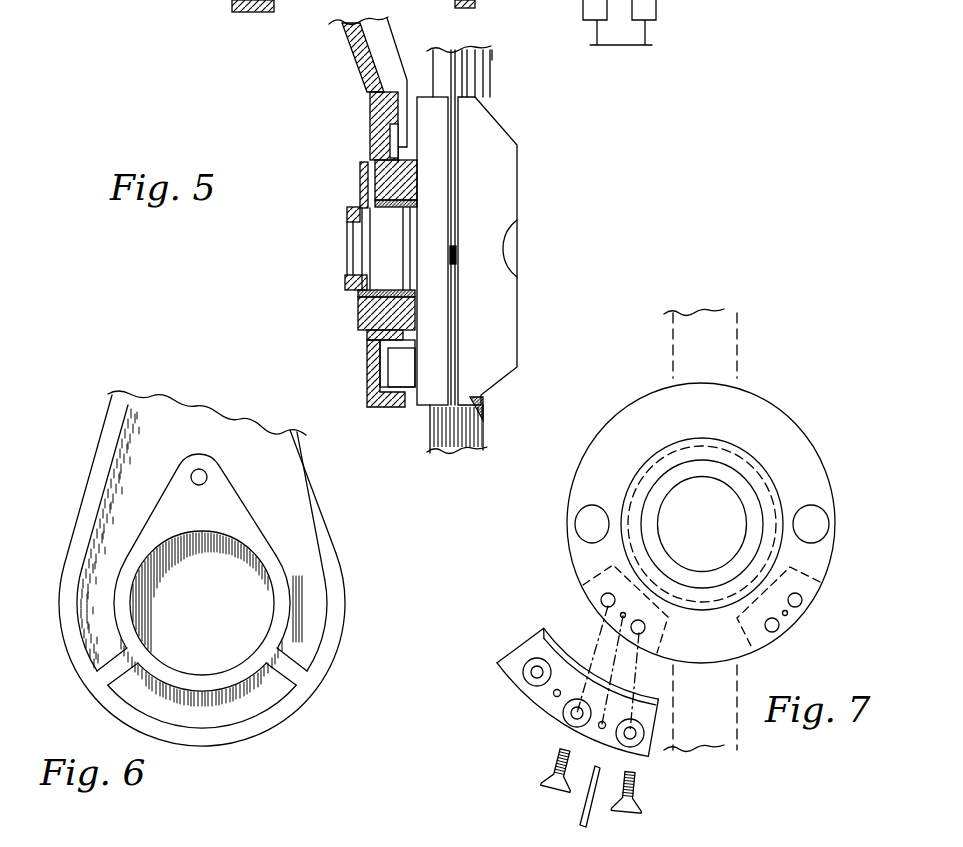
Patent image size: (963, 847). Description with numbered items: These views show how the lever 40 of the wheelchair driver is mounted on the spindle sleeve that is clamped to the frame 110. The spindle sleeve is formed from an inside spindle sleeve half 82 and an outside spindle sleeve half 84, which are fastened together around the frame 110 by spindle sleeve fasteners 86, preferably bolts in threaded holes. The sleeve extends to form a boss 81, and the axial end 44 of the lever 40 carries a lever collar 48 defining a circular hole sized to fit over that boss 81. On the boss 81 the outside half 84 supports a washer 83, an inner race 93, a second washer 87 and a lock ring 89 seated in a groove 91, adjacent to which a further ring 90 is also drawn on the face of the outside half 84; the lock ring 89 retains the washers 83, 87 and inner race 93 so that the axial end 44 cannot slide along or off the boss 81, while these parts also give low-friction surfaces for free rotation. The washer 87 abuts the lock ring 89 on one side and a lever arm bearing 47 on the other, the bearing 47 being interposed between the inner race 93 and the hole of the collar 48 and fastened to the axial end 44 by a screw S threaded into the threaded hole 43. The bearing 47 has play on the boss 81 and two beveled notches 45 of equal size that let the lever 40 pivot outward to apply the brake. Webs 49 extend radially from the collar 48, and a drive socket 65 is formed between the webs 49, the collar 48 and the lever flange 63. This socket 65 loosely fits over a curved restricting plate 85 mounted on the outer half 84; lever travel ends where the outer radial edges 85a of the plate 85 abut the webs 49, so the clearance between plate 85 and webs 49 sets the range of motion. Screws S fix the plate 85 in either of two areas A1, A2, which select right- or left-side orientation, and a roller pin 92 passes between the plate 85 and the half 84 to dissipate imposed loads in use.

In FIG. 5, the lever 40 is at (385, 68).
In FIG. 6, the lever 40 is at (140, 432).
In FIG. 5, the threaded hole 43 is at (390, 128).
In FIG. 6, the threaded hole 43 is at (192, 477).
In FIG. 6, the axial end 44 is at (354, 543).
In FIG. 5, the beveled notches 45 is at (370, 163).
In FIG. 5, the lever arm bearing 47 is at (372, 327).
In FIG. 6, the lever collar 48 is at (283, 602).
In FIG. 6, the webs 49 is at (293, 667).
In FIG. 6, the lever flange 63 is at (283, 708).
In FIG. 6, the drive socket 65 is at (230, 713).
In FIG. 5, the boss 81 is at (350, 213).
In FIG. 5, the inside spindle sleeve half 82 is at (487, 137).
In FIG. 5, the washer 83 is at (415, 182).
In FIG. 7, the outside spindle sleeve half 84 is at (745, 412).
In FIG. 5, the restricting plate 85 is at (402, 368).
In FIG. 7, the restricting plate 85 is at (550, 706).
In FIG. 7, the outer radial edges 85a is at (520, 645).
In FIG. 5, the spindle sleeve fasteners 86 is at (457, 250).
In FIG. 7, the spindle sleeve fasteners 86 is at (815, 527).
In FIG. 5, the washer 87 is at (360, 318).
In FIG. 5, the lock ring 89 is at (352, 298).
In FIG. 7, the inner ring 90 is at (735, 487).
In FIG. 7, the groove 91 is at (770, 492).
In FIG. 7, the roller pin 92 is at (585, 803).
In FIG. 5, the inner race 93 is at (390, 295).
In FIG. 5, the frame 110 is at (450, 83).
In FIG. 7, the frame 110 is at (710, 362).
In FIG. 7, the area A1 is at (605, 587).
In FIG. 7, the area A2 is at (805, 585).
In FIG. 7, the screw S is at (545, 780).